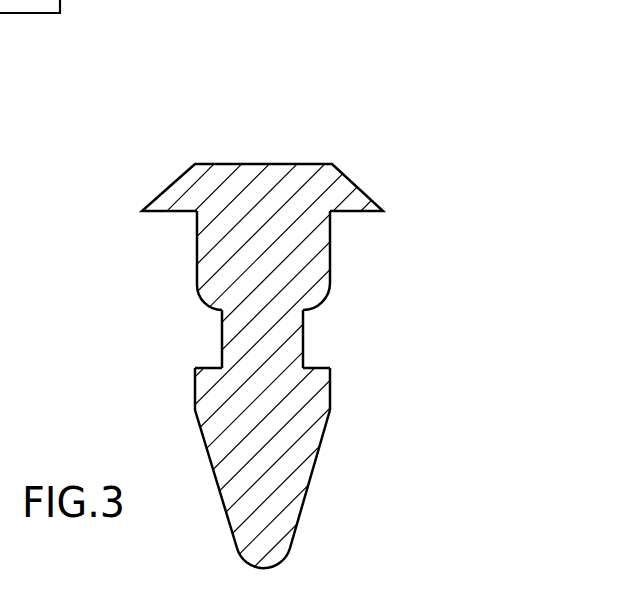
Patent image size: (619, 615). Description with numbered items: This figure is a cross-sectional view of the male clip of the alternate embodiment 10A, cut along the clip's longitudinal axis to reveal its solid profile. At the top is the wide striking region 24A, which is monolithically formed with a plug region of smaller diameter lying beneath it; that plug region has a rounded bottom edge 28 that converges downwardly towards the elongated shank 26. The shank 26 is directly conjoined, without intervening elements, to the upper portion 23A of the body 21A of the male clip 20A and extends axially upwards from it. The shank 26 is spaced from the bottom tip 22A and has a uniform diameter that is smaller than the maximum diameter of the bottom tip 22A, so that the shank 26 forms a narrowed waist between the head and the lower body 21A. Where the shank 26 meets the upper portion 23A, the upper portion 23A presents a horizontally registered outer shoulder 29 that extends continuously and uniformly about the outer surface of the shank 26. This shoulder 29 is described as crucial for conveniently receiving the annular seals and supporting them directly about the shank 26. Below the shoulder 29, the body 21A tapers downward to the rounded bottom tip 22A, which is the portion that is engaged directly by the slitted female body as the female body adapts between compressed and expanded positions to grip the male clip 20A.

The alternate embodiment 10A is at (287, 128).
The striking region 24A is at (310, 172).
The outer shoulder 29 is at (318, 240).
The rounded bottom edge 28 is at (327, 290).
The elongated shank 26 is at (307, 332).
The male clip 20A is at (183, 360).
The upper portion 23A is at (212, 397).
The body 21A is at (270, 505).
The bottom tip 22A is at (260, 571).